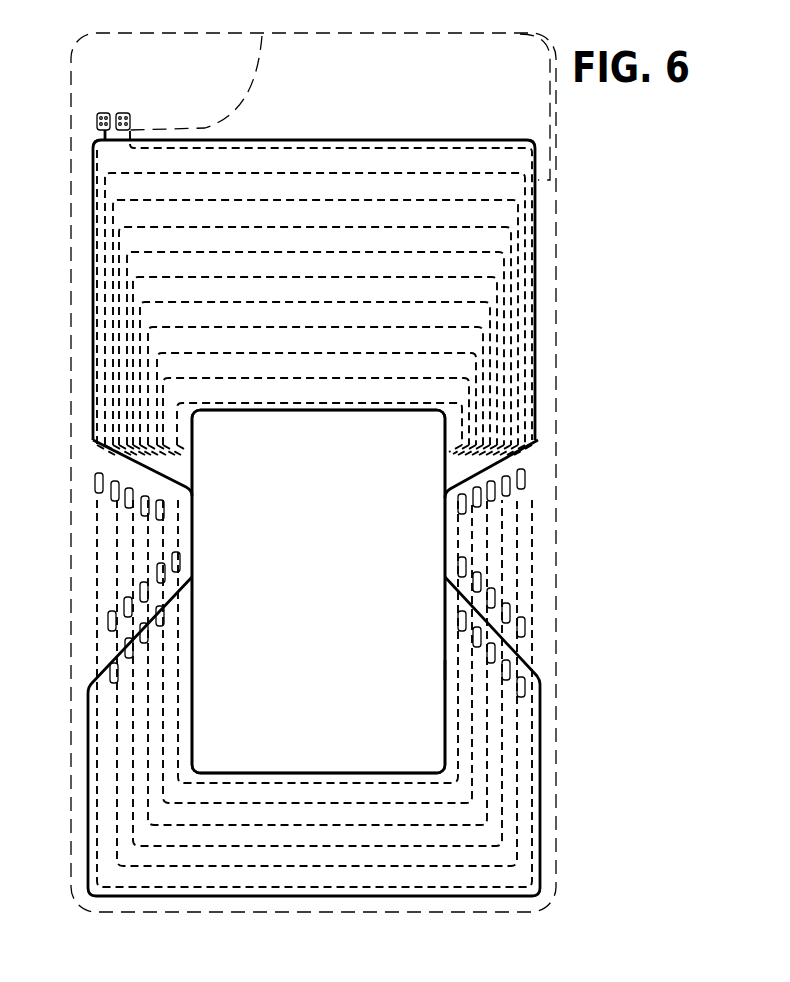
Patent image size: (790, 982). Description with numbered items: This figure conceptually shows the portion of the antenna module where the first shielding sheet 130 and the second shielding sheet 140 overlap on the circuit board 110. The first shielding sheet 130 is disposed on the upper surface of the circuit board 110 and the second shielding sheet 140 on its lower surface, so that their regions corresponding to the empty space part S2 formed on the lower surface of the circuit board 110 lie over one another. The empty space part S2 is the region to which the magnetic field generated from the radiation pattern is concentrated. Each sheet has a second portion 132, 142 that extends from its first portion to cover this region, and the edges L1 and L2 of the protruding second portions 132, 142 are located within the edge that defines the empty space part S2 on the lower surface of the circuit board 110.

The circuit board 110 is at (557, 418).
The first shielding sheet 130 is at (548, 210).
The second shielding sheet 140 is at (550, 772).
The second portion 132 is at (412, 545).
The second portion 142 is at (318, 591).
The edge L1 is at (404, 776).
The edge L2 is at (407, 411).
The empty space part S2 is at (451, 676).